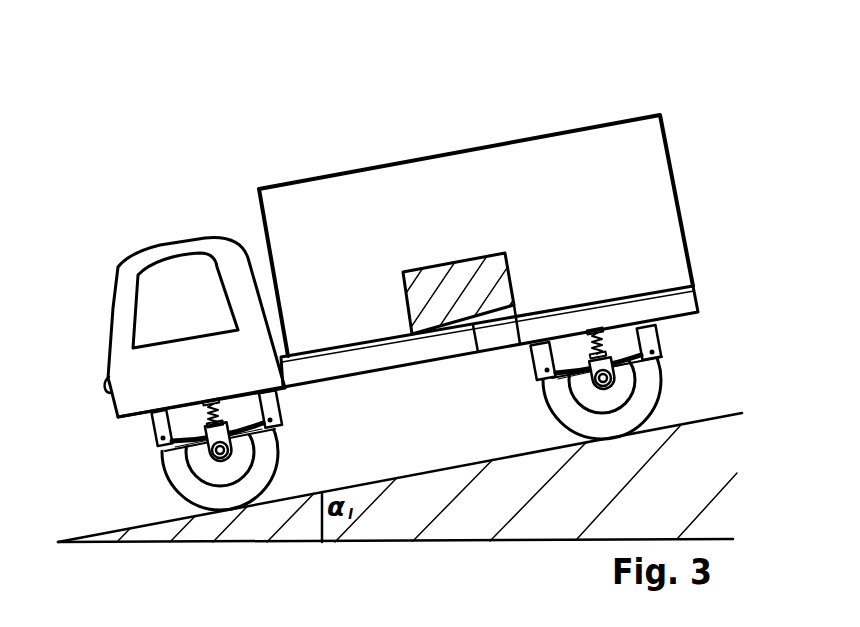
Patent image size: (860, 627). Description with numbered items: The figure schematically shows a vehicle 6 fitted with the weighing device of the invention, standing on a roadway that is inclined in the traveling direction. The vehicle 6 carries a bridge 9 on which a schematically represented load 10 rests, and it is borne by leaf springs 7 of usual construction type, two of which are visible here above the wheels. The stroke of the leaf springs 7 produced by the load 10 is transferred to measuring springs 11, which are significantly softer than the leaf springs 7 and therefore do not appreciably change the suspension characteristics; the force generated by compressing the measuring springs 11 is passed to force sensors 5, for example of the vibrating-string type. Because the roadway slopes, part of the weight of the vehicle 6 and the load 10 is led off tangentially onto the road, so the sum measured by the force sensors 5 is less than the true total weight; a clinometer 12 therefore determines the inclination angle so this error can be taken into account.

The force sensor 5 is at (213, 403).
The vehicle 6 is at (267, 186).
The leaf spring 7 is at (167, 447).
The bridge 9 is at (687, 303).
The load 10 is at (443, 288).
The measuring spring 11 is at (210, 418).
The clinometer 12 is at (505, 335).